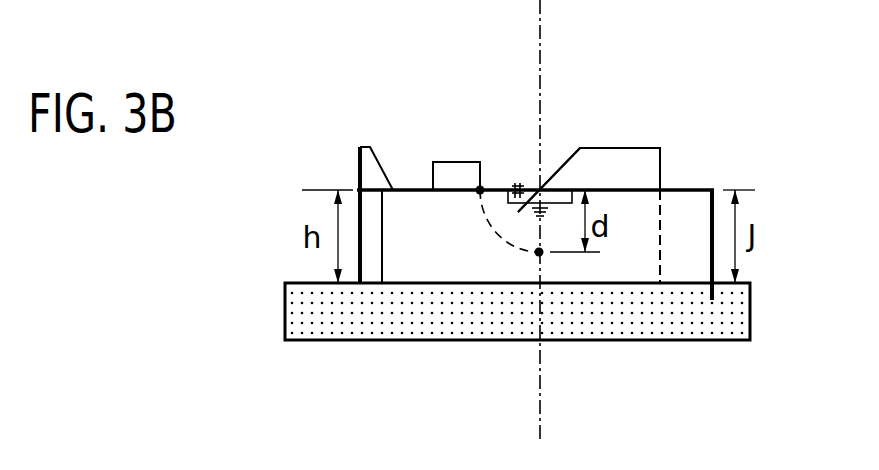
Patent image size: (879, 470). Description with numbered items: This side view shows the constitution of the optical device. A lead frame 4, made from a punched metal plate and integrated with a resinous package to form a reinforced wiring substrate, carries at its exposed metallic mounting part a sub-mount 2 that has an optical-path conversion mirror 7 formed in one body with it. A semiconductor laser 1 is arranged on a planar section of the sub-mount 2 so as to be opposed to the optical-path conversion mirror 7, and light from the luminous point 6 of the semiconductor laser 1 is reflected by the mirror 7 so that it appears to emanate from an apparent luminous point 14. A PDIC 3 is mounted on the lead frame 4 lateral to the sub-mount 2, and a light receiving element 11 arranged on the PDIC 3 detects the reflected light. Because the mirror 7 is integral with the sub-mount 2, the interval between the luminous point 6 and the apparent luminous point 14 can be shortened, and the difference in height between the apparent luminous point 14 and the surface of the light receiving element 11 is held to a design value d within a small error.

The semiconductor laser 1 is at (466, 162).
The sub-mount 2 is at (628, 165).
The PDIC (photo detector IC) 3 is at (683, 283).
The lead frame 4 is at (392, 340).
The luminous point 6 is at (481, 189).
The optical-path conversion mirror 7 is at (557, 171).
The light receiving element 11 is at (541, 188).
The apparent luminous point 14 is at (550, 257).